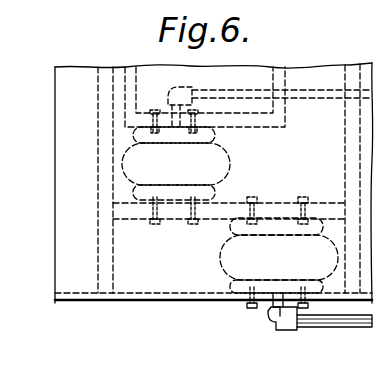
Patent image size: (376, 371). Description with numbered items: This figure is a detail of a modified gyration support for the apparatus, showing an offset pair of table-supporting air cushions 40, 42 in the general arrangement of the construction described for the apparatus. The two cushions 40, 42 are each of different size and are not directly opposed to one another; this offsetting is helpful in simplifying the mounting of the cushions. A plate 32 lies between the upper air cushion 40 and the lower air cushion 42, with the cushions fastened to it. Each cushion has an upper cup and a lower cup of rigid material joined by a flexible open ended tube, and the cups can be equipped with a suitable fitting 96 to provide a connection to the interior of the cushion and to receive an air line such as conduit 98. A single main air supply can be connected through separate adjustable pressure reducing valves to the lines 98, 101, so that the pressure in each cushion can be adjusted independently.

The air line 101 is at (322, 95).
The table-supporting air cushion 40 is at (229, 160).
The plate 32 is at (235, 206).
The table-supporting air cushion 42 is at (219, 262).
The fitting 96 is at (276, 318).
The conduit 98 is at (326, 328).